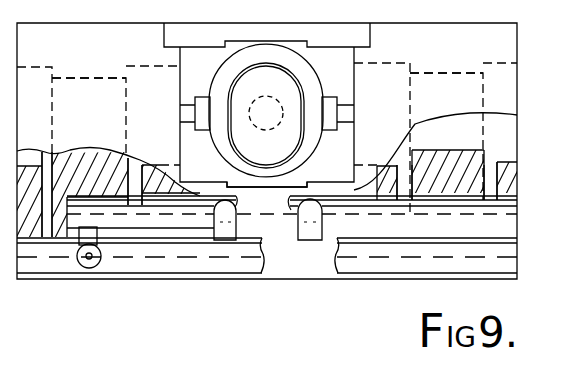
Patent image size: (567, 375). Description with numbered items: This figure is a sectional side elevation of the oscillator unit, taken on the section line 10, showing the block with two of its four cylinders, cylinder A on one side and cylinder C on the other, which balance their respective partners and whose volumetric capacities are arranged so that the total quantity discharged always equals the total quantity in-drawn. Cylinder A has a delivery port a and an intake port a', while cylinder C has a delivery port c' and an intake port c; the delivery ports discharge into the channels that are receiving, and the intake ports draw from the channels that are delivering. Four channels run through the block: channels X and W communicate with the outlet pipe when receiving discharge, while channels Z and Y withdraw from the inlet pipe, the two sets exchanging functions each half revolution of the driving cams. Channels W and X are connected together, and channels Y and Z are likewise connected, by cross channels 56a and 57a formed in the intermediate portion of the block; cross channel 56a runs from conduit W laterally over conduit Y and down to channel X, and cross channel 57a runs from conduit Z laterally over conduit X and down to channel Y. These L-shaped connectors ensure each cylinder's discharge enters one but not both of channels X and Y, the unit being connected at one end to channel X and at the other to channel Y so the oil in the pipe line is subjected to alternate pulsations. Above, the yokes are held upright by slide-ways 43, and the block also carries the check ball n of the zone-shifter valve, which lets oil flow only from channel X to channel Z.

The section line 10 is at (48, 298).
The cylinder A is at (89, 66).
The cylinder C is at (446, 65).
The port a is at (42, 185).
The intake port a' is at (141, 170).
The port c' is at (403, 168).
The intake port c is at (497, 167).
The channel Z is at (108, 190).
The cross channel 56a is at (222, 205).
The cross channel 57a is at (322, 206).
The slide-ways 43 is at (300, 185).
The channel W is at (263, 209).
The check ball n is at (89, 268).
The channel X is at (227, 262).
The channel Y is at (320, 268).